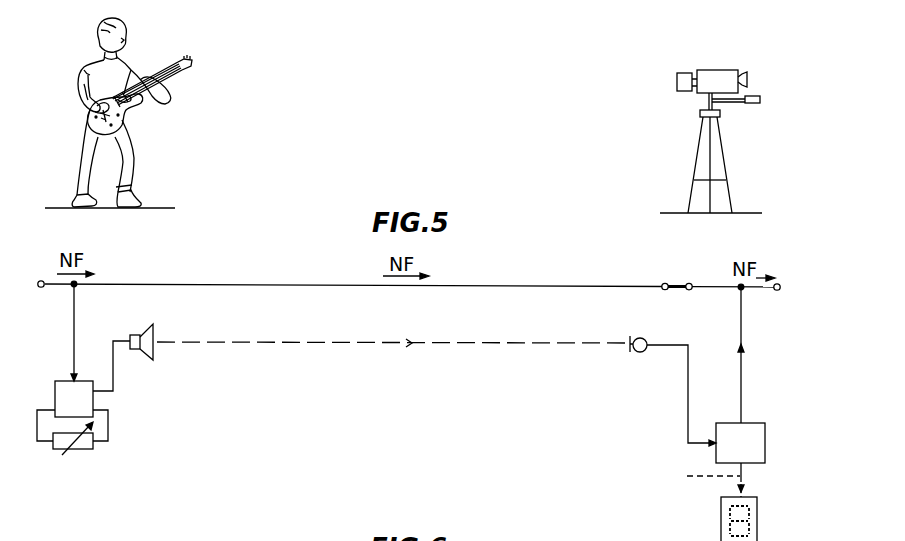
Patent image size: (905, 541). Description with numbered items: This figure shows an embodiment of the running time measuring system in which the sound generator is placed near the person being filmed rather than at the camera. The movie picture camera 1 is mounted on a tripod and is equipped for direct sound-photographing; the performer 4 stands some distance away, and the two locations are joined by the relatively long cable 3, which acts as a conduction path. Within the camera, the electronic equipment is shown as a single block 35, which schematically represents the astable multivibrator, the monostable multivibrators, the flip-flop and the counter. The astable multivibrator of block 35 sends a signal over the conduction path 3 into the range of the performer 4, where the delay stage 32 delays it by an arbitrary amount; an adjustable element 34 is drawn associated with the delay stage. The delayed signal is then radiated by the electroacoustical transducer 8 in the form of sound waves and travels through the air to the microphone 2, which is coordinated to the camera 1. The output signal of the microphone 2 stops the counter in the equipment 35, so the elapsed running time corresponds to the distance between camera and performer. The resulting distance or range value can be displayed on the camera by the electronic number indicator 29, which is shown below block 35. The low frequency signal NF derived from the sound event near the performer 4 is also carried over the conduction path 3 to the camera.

The movie picture camera 1 is at (714, 71).
The microphone 2 is at (646, 340).
The cable 3 is at (560, 284).
The performer 4 is at (127, 121).
The electroacoustical transducer 8 is at (147, 333).
The electronic number indicator 29 is at (720, 517).
The delay stage 32 is at (68, 391).
The adjustable attenuator / variable resistor 34 is at (83, 449).
The electronic equipment block 35 is at (751, 429).